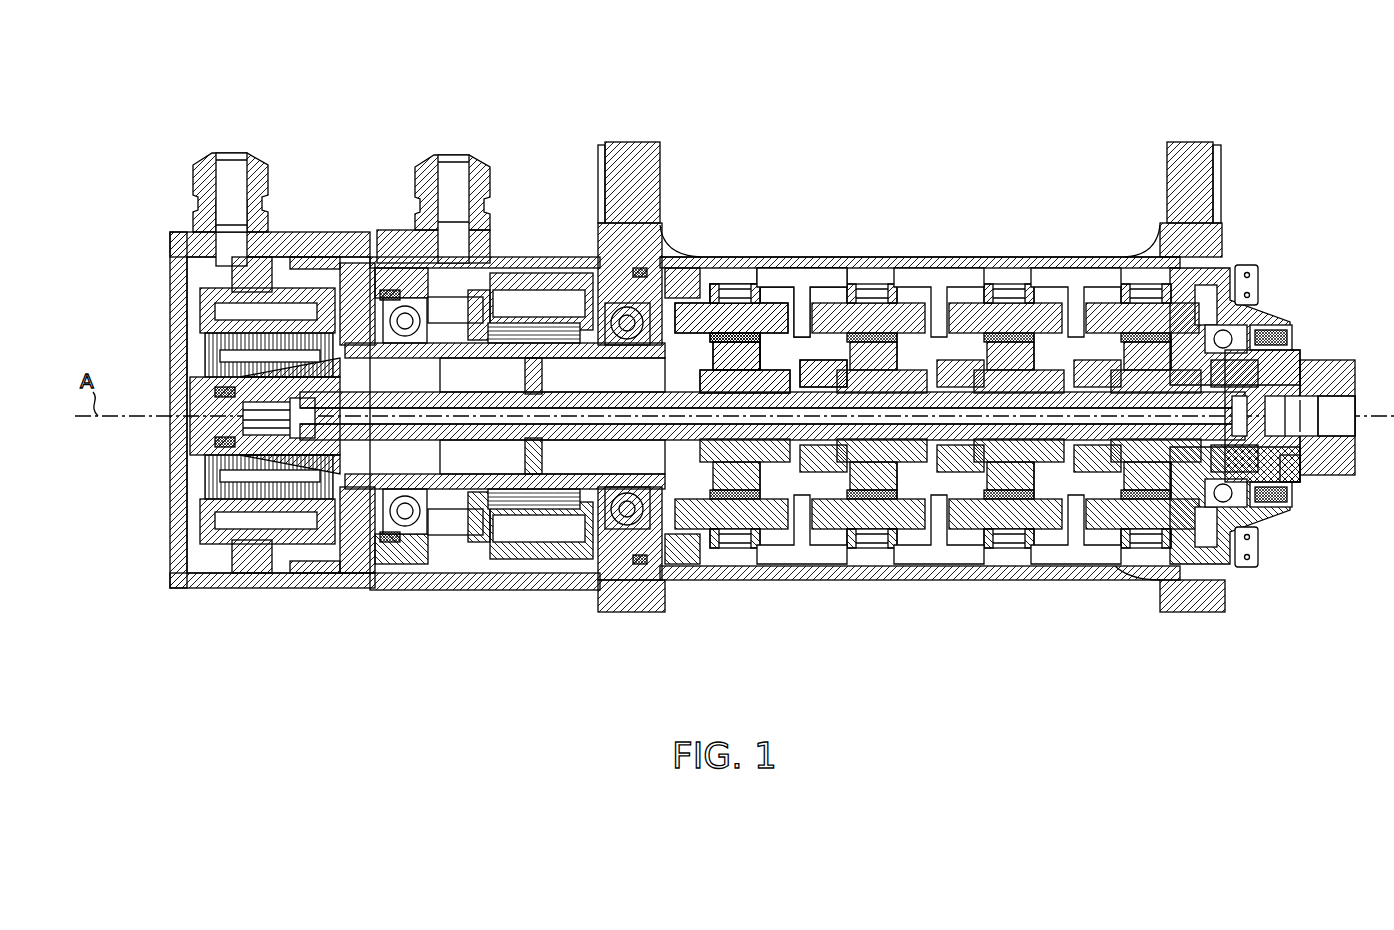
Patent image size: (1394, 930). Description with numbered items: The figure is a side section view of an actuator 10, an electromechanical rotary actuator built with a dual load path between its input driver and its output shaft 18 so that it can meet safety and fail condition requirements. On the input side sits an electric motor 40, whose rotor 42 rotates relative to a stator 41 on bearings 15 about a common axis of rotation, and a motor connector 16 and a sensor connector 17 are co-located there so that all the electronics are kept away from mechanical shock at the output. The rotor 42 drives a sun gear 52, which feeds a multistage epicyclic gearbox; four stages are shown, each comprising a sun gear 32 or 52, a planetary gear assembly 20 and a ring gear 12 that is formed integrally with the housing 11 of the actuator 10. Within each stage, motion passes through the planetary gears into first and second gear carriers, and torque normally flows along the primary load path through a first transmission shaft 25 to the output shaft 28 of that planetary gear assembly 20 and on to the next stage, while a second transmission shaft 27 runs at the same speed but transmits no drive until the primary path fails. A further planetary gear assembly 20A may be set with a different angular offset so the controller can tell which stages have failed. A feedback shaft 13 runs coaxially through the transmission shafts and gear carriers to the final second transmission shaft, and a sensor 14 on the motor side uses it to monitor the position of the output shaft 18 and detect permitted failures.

The actuator 10 is at (1083, 128).
The housing 11 is at (935, 262).
The ring gear 12 is at (745, 265).
The feedback shaft 13 is at (343, 440).
The sensor 14 is at (175, 337).
The bearing 15 is at (400, 522).
The motor connector 16 is at (425, 157).
The sensor connector 17 is at (212, 153).
The output shaft 18 is at (1345, 478).
The output shaft of planetary gear assembly 28 is at (1336, 416).
The planetary gear assembly 20 is at (788, 570).
The planetary gear assembly 20A is at (1190, 575).
The first transmission shaft 25 is at (1295, 352).
The second transmission shaft 27 is at (1298, 482).
The sun gear 32 is at (872, 555).
The motor 40 is at (465, 590).
The stator 41 is at (560, 280).
The rotor 42 is at (530, 330).
The sun gear 52 is at (745, 550).